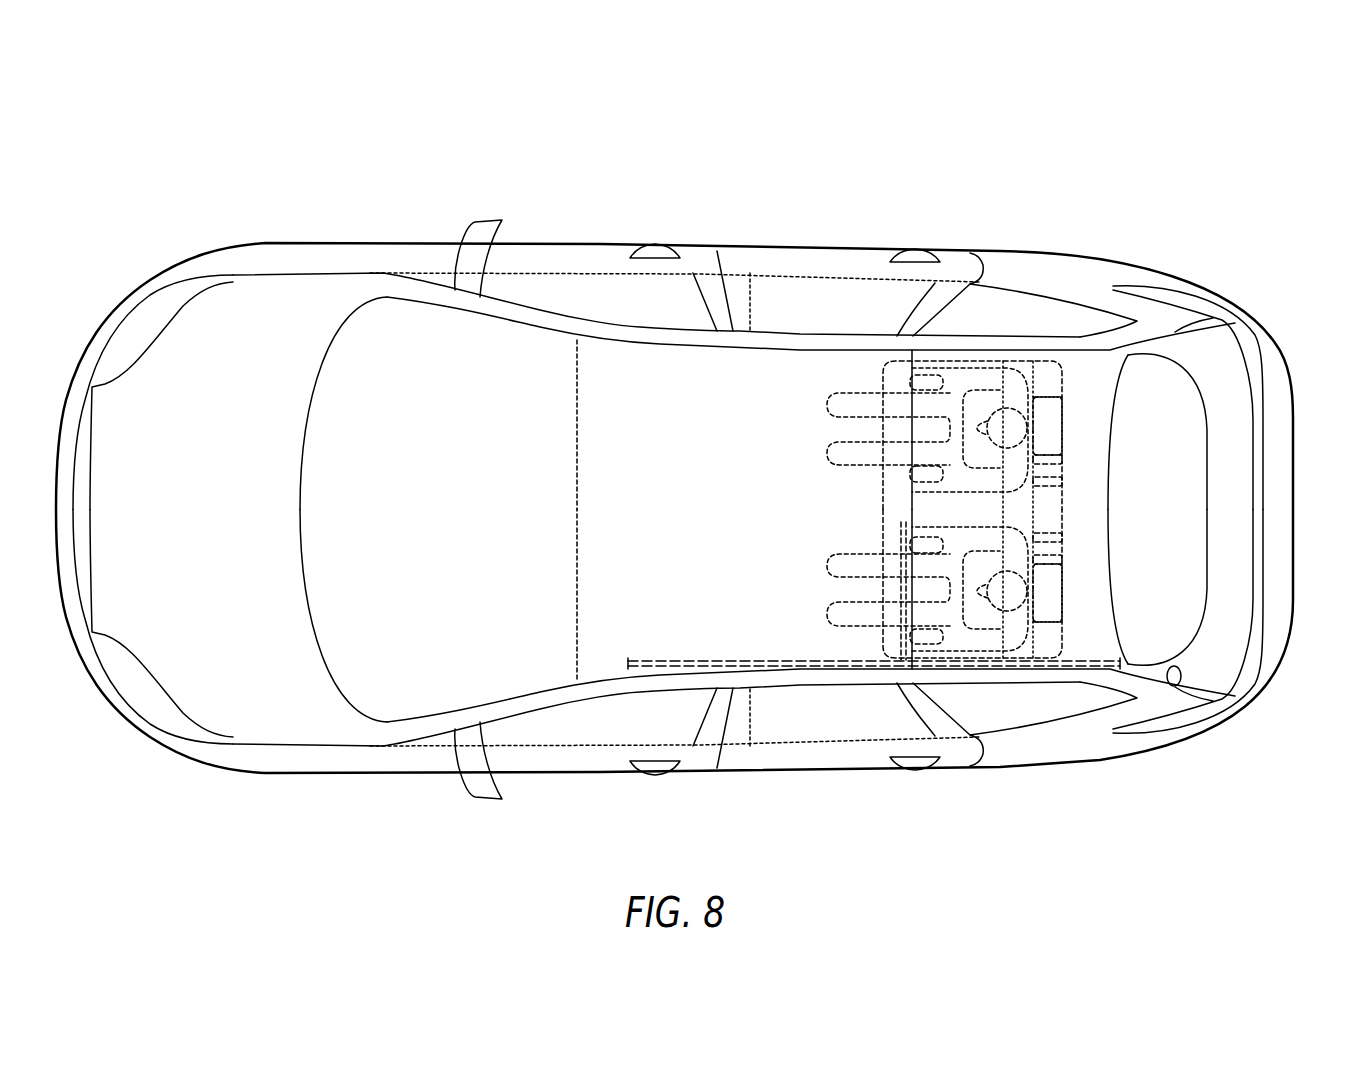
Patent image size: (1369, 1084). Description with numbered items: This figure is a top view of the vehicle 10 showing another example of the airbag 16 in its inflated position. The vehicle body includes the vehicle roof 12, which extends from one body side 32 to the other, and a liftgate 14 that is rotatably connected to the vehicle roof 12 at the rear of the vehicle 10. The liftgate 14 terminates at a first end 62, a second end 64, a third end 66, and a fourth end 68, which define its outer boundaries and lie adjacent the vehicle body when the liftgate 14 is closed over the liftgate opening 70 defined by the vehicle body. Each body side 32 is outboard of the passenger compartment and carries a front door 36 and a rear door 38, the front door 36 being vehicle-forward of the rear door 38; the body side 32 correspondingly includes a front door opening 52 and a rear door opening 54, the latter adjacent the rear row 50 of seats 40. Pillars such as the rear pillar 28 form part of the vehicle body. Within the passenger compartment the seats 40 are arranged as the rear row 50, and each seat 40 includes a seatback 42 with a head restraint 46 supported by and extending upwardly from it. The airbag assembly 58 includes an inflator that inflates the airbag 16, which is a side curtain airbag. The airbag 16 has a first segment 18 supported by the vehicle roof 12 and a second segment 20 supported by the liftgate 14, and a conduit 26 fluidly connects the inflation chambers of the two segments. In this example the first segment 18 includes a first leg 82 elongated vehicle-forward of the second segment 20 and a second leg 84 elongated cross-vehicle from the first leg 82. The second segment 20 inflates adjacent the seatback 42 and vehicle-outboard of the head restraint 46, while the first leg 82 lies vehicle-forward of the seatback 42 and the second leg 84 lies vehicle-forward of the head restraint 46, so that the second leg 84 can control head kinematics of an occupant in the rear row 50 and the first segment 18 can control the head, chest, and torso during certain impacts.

The vehicle 10 is at (963, 136).
The vehicle roof 12 is at (655, 398).
The liftgate 14 is at (1252, 447).
The airbag 16 is at (818, 675).
The first segment 18 is at (715, 662).
The second segment 20 is at (1096, 636).
The conduit 26 is at (912, 675).
The rear pillar 28 is at (1030, 335).
The body side 32 is at (1167, 262).
The front door 36 is at (587, 257).
The rear door 38 is at (850, 262).
The seat 40 is at (1077, 428).
The seatback 42 is at (1067, 549).
The head restraint 46 is at (1063, 594).
The rear row 50 is at (985, 337).
The front door opening 52 is at (553, 312).
The rear door opening 54 is at (787, 332).
The airbag assembly 58 is at (745, 640).
The first end 62 is at (908, 500).
The second end 64 is at (1208, 690).
The third end 66 is at (1175, 332).
The fourth end 68 is at (1267, 514).
The liftgate opening 70 is at (1175, 686).
The first leg 82 is at (800, 660).
The second leg 84 is at (903, 541).